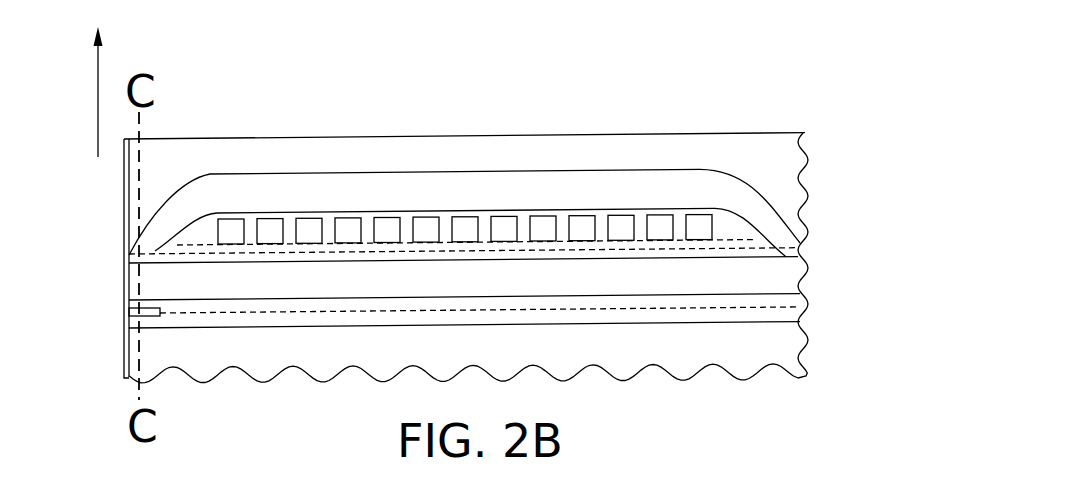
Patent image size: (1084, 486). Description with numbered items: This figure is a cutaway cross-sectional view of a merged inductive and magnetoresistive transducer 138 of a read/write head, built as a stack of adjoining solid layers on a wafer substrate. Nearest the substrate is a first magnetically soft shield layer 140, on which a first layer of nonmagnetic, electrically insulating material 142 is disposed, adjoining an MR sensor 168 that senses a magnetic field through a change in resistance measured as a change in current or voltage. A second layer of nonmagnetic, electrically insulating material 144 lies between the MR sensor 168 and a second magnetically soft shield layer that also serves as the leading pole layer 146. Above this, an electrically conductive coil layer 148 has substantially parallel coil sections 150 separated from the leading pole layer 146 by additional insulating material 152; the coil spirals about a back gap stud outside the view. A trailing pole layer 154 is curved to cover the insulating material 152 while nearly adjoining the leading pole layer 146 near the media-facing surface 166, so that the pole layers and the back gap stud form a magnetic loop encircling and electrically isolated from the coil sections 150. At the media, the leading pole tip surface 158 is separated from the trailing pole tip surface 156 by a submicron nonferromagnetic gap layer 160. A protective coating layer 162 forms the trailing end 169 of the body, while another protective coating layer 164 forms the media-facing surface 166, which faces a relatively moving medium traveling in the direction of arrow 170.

The merged inductive and magnetoresistive transducer 138 is at (475, 52).
The first magnetically soft shield layer 140 is at (790, 340).
The first layer of nonmagnetic, electrically insulating material 142 is at (800, 320).
The second layer of nonmagnetic, electrically insulating material 144 is at (800, 300).
The leading pole layer 146 is at (794, 268).
The electrically conductive coil layer 148 is at (773, 216).
The coil sections 150 is at (657, 230).
The nonmagnetic, electrically insulating material 152 is at (208, 250).
The trailing pole layer 154 is at (728, 230).
The trailing pole tip surface 156 is at (142, 236).
The leading pole tip surface 158 is at (141, 292).
The nonferromagnetic gap layer 160 is at (130, 259).
The protective coating layer 162 is at (682, 142).
The protective coating layer 164 is at (125, 357).
The media-facing surface 166 is at (116, 325).
The MR sensor 168 is at (129, 312).
The trailing end 169 is at (526, 128).
The arrow 170 is at (97, 93).